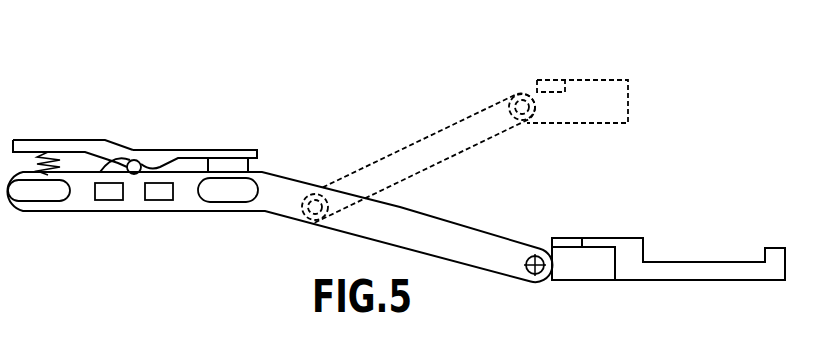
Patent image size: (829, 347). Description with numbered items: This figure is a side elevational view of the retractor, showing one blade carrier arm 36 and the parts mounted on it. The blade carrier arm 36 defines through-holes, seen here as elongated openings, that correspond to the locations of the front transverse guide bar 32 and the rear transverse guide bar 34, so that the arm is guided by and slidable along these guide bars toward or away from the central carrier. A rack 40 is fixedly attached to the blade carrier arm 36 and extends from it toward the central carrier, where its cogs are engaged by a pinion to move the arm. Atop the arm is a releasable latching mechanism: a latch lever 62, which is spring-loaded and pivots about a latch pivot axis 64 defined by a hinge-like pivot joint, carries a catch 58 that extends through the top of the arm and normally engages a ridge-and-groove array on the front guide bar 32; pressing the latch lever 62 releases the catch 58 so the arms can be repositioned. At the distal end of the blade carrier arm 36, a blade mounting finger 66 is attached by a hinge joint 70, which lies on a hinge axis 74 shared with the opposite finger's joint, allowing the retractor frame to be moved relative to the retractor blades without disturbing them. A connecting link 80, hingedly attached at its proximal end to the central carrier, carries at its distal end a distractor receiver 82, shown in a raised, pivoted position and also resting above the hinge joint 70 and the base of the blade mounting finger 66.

The front transverse guide bar 32 is at (230, 192).
The rear transverse guide bar 34 is at (40, 196).
The blade carrier arm 36 is at (466, 240).
The rack 40 is at (158, 193).
The catch 58 is at (228, 165).
The latch lever 62 is at (60, 140).
The latch pivot axis 64 is at (138, 160).
The blade mounting finger 66 is at (708, 282).
The hinge joint 70 is at (548, 282).
The hinge axis 74 is at (527, 278).
The connecting link 80 is at (408, 140).
The distractor receiver 82 is at (598, 80).